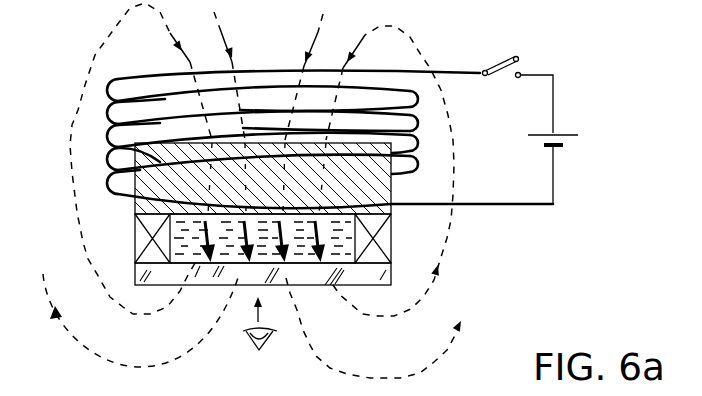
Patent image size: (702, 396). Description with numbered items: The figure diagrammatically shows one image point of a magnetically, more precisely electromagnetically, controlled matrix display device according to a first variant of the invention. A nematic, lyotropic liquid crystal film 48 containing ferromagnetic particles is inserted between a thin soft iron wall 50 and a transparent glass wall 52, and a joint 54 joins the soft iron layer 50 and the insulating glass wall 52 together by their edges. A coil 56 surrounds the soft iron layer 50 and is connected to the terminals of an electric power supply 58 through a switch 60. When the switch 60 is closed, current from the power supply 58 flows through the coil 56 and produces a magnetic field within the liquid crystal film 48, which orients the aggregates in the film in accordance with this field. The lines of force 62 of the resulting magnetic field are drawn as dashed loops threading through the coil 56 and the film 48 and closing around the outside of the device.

The liquid crystal film 48 is at (300, 250).
The soft iron wall 50 is at (120, 155).
The glass wall 52 is at (135, 286).
The joint 54 is at (137, 215).
The coil 56 is at (128, 80).
The electric power supply 58 is at (584, 128).
The switch 60 is at (518, 52).
The lines of force of the magnetic field 62 is at (451, 222).